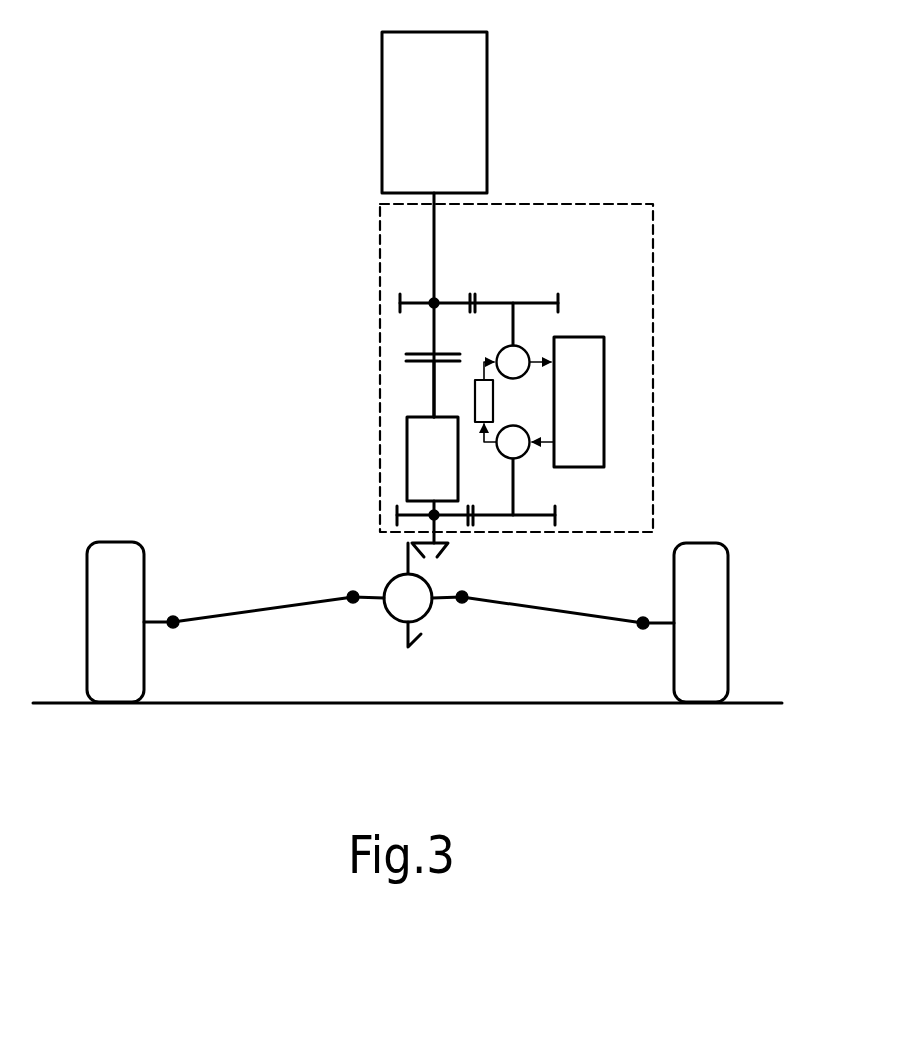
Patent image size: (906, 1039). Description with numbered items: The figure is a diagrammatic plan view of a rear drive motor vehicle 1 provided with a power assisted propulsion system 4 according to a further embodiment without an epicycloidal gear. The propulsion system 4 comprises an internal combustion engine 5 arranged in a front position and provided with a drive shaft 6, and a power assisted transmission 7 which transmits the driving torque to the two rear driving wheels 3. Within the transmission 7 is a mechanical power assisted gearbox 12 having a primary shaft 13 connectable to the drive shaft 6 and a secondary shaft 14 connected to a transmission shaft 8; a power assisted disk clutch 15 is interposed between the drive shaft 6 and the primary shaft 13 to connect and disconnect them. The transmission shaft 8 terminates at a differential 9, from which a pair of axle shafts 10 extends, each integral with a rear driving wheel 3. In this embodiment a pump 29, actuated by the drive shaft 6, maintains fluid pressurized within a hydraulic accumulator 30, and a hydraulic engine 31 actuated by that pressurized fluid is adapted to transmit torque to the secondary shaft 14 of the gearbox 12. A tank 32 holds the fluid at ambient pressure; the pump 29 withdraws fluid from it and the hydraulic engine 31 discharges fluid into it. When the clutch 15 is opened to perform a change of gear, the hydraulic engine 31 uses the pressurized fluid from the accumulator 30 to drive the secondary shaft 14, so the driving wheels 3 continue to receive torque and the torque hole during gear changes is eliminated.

The motor vehicle 1 is at (239, 179).
The rear driving wheels 3 is at (110, 557).
The propulsion system 4 is at (259, 317).
The internal combustion engine 5 is at (462, 100).
The drive shaft 6 is at (434, 256).
The power assisted transmission 7 is at (600, 204).
The transmission shaft 8 is at (437, 522).
The differential 9 is at (420, 613).
The axle shafts 10 is at (253, 613).
The mechanical power assisted gearbox 12 is at (423, 452).
The primary shaft 13 is at (433, 397).
The secondary shaft 14 is at (408, 508).
The power assisted disk clutch 15 is at (405, 352).
The pump 29 is at (530, 350).
The hydraulic accumulator 30 is at (592, 366).
The hydraulic engine 31 is at (522, 455).
The tank 32 is at (474, 390).